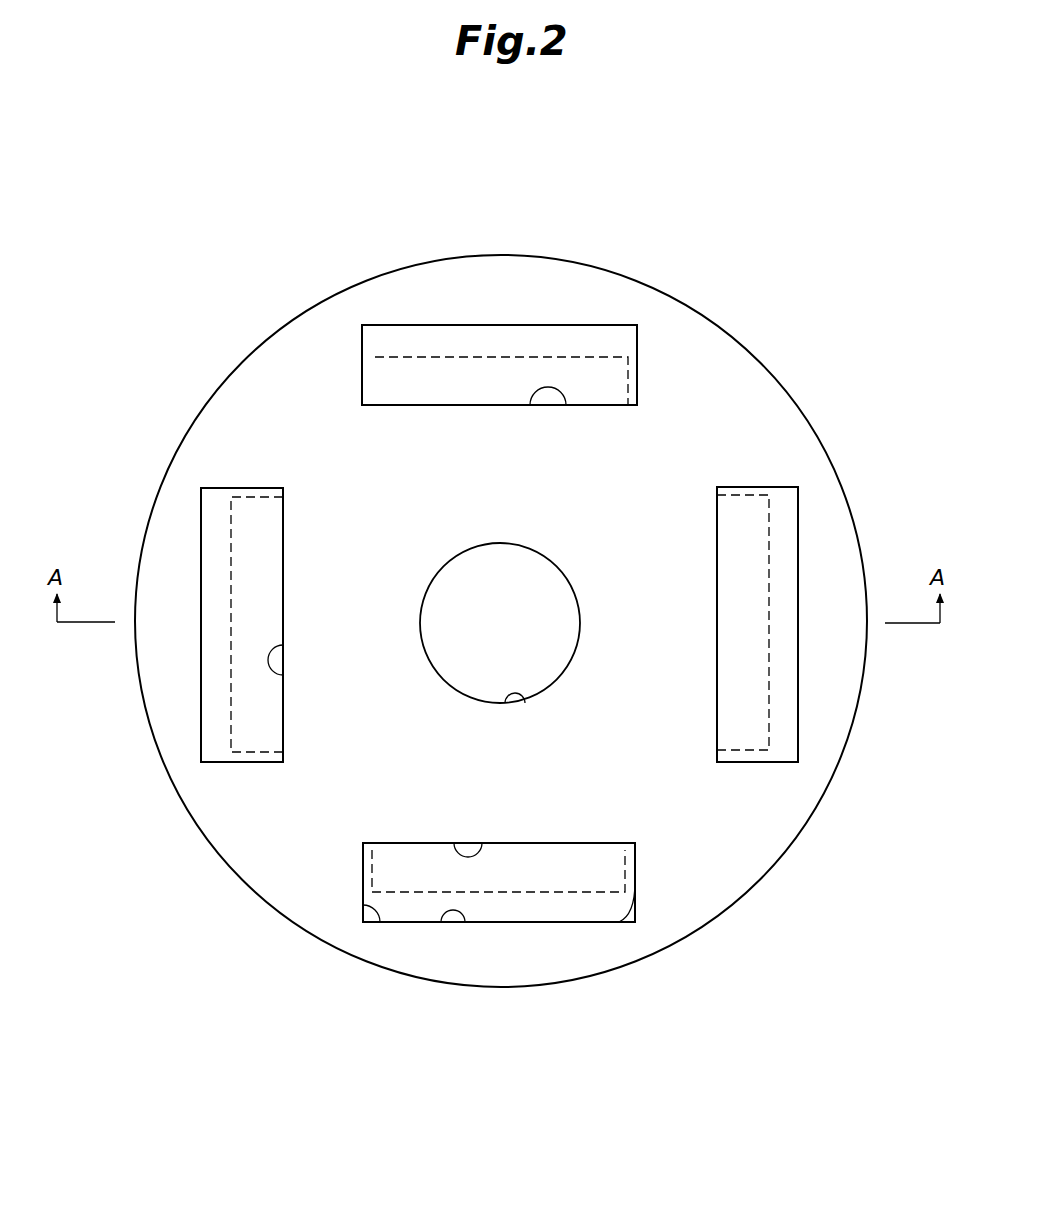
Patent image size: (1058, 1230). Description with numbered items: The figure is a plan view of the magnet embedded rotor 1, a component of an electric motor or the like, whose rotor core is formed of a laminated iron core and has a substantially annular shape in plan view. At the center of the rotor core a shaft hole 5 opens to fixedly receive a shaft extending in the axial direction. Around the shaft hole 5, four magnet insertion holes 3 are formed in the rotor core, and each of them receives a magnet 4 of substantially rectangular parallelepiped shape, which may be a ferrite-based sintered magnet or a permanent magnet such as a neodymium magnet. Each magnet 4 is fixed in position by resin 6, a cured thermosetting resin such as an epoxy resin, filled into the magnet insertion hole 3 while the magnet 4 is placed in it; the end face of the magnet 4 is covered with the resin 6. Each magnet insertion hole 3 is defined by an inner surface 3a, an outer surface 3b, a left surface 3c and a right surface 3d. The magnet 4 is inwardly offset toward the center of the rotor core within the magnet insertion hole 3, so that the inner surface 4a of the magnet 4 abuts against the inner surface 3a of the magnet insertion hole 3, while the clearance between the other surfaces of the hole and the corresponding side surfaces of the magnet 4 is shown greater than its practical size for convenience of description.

The magnet embedded rotor 1 is at (688, 224).
The magnet insertion hole 3 is at (582, 333).
The inner surface 3a is at (566, 405).
The outer surface 3b is at (456, 922).
The left surface 3c is at (378, 930).
The right surface 3d is at (620, 920).
The magnet 4 is at (408, 362).
The inner surface 4a is at (445, 405).
The shaft hole 5 is at (520, 698).
The resin 6 is at (510, 330).